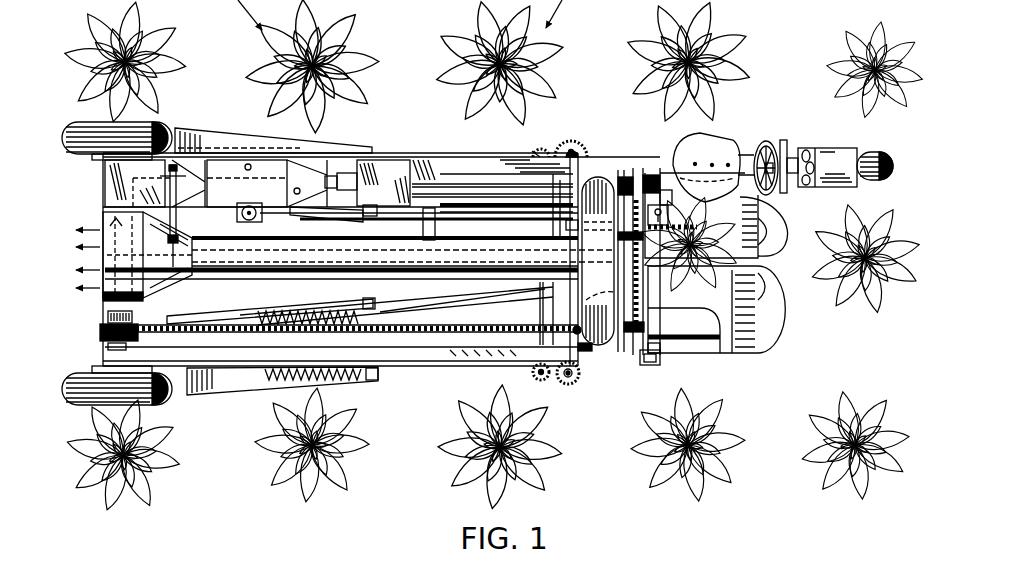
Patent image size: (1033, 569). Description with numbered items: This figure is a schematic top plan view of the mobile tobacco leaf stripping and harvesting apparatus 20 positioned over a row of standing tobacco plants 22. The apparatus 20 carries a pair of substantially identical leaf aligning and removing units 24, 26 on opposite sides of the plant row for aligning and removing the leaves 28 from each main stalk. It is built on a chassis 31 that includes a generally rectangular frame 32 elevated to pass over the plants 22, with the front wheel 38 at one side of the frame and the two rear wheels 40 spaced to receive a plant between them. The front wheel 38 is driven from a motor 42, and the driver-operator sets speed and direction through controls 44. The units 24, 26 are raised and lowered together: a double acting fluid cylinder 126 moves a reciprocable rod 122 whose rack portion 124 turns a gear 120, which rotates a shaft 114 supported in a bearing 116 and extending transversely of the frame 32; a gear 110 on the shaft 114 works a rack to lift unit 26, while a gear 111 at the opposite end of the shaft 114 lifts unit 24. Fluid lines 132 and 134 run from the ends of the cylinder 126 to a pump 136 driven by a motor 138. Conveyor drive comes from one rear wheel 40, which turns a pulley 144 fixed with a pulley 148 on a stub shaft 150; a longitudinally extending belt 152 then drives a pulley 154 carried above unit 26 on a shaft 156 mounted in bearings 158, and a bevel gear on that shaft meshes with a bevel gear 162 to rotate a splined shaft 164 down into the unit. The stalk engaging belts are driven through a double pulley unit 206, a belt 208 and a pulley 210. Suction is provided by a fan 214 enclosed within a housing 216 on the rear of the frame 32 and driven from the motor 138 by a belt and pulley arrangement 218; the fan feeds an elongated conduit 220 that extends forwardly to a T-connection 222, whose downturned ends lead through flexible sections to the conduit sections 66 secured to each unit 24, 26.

The mobile tobacco leaf stripping and harvesting apparatus 20 is at (420, 146).
The tobacco plants 22 is at (455, 432).
The leaf aligning and removing unit 24 is at (790, 215).
The leaf aligning and removing unit 26 is at (773, 348).
The leaves 28 is at (172, 66).
The chassis 31 is at (420, 368).
The frame 32 is at (480, 157).
The front wheel 38 is at (893, 154).
The rear wheels 40 is at (75, 143).
The motor 42 is at (830, 158).
The controls 44 is at (795, 146).
The conduit sections 66 is at (703, 330).
The gear 110 is at (636, 358).
The gear 111 is at (638, 175).
The shaft 114 is at (642, 321).
The bearing 116 is at (622, 178).
The gear 120 is at (622, 260).
The reciprocable rod 122 is at (557, 235).
The rack portion 124 is at (719, 203).
The double acting fluid cylinder 126 is at (423, 230).
The fluid line 132 is at (594, 251).
The fluid line 134 is at (430, 208).
The pump 136 is at (392, 162).
The motor 138 is at (233, 168).
The pulley 144 is at (100, 333).
The pulley 148 is at (106, 318).
The stub shaft 150 is at (106, 346).
The belt 152 is at (158, 323).
The pulley 154 is at (575, 328).
The shaft 156 is at (542, 283).
The bearings 158 is at (582, 346).
The bevel gear 162 is at (562, 143).
The splined shaft 164 is at (577, 142).
The double pulley unit 206 is at (536, 372).
The belt 208 is at (542, 148).
The pulley 210 is at (535, 148).
The fan 214 is at (125, 283).
The housing 216 is at (105, 224).
The belt and pulley arrangement 218 is at (178, 214).
The conduit 220 is at (255, 318).
The T-connection 222 is at (584, 294).